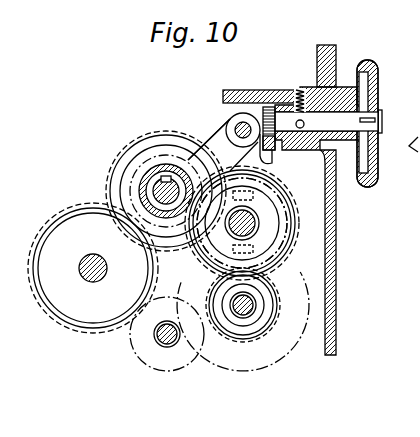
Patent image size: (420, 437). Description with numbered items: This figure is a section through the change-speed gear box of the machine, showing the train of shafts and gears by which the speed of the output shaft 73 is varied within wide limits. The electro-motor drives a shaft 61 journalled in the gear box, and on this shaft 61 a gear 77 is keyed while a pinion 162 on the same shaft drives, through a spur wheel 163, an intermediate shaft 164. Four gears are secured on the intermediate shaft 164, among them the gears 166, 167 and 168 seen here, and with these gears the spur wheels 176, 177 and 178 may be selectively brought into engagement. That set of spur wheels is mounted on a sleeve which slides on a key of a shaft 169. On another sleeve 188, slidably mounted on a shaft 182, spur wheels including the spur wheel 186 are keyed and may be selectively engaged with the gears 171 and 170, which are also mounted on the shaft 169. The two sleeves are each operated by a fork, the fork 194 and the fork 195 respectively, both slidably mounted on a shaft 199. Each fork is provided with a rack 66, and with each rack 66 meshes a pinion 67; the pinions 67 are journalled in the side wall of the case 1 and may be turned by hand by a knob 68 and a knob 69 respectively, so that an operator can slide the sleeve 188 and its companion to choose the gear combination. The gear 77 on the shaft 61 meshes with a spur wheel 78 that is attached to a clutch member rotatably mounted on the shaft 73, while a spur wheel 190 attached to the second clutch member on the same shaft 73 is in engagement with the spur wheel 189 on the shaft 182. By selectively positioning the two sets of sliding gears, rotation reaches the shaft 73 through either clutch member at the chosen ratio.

The base 1 is at (336, 295).
The shaft 61 is at (160, 340).
The rack 66 is at (274, 144).
The pinion 67 is at (267, 107).
The knob 68 is at (362, 61).
The knob 69 is at (326, 123).
The shaft 73 is at (86, 276).
The gear 77 is at (165, 366).
The spur wheel 78 is at (78, 327).
The pinion 162 is at (155, 335).
The spur wheel 163 is at (281, 364).
The intermediate shaft 164 is at (246, 316).
The gear 166 is at (238, 317).
The gear 167 is at (253, 320).
The gear 168 is at (278, 313).
The shaft 169 is at (250, 230).
The gear 170 is at (262, 274).
The gear 171 is at (232, 240).
The spur wheel 176 is at (296, 217).
The spur wheel 177 is at (283, 246).
The spur wheel 178 is at (195, 258).
The shaft 182 is at (148, 186).
The spur wheel 186 is at (131, 143).
The sleeve 188 is at (150, 206).
The spur wheel 189 is at (157, 146).
The spur wheel 190 is at (78, 204).
The fork 194 is at (253, 197).
The fork 195 is at (195, 133).
The shaft 199 is at (236, 127).